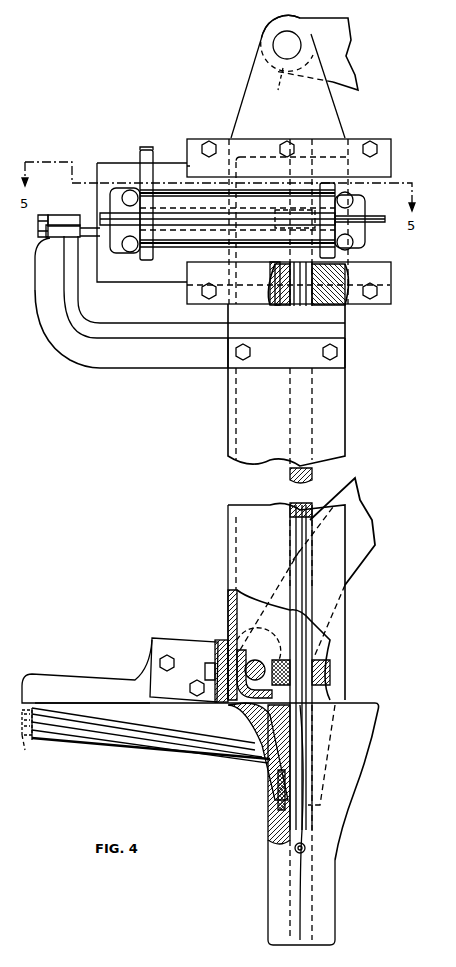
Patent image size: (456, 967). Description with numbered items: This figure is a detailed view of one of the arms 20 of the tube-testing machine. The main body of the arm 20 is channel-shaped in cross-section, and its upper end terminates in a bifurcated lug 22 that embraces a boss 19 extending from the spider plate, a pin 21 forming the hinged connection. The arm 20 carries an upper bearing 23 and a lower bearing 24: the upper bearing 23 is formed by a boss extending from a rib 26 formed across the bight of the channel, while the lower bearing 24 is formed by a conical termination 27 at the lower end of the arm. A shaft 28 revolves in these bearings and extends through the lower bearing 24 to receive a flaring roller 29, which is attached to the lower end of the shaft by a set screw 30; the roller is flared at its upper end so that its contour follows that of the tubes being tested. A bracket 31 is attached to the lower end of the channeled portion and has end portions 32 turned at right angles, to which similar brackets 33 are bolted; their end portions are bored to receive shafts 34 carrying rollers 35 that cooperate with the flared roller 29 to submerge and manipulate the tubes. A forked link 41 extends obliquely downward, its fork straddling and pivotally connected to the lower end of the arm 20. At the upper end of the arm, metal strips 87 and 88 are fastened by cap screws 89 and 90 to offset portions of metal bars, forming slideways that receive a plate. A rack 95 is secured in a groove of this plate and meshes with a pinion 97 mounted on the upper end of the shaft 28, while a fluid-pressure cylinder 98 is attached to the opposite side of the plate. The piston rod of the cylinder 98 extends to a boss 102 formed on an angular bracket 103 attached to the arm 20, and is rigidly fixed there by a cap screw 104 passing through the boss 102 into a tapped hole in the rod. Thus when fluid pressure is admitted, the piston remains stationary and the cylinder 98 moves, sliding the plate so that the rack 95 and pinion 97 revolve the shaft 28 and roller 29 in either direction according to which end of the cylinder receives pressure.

The boss 19 is at (278, 87).
The arm 20 is at (343, 427).
The pin 21 is at (285, 45).
The bifurcated lug 22 is at (298, 26).
The upper bearing 23 is at (270, 297).
The lower bearing 24 is at (272, 760).
The rib 26 is at (336, 305).
The conical termination 27 is at (270, 808).
The shaft 28 is at (312, 660).
The flaring roller 29 is at (327, 842).
The set screw 30 is at (305, 852).
The bracket 31 is at (226, 642).
The end portion 32 is at (180, 657).
The bracket 33 is at (100, 681).
The shaft 34 is at (32, 740).
The roller 35 is at (147, 742).
The forked link 41 is at (360, 560).
The metal strip 87 is at (194, 143).
The metal strip 88 is at (381, 274).
The cap screw 89 is at (372, 147).
The cap screw 90 is at (372, 294).
The rack 95 is at (180, 257).
The pinion 97 is at (285, 210).
The fluid-pressure cylinder 98 is at (362, 238).
The boss 102 is at (62, 224).
The angular bracket 103 is at (158, 357).
The cap screw 104 is at (45, 232).